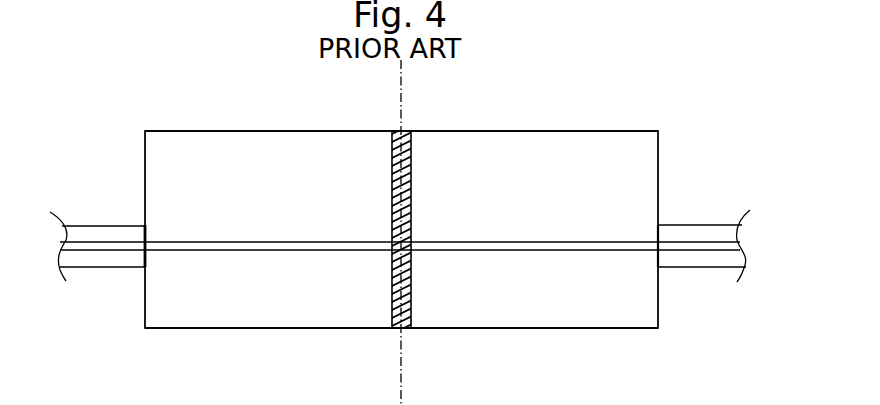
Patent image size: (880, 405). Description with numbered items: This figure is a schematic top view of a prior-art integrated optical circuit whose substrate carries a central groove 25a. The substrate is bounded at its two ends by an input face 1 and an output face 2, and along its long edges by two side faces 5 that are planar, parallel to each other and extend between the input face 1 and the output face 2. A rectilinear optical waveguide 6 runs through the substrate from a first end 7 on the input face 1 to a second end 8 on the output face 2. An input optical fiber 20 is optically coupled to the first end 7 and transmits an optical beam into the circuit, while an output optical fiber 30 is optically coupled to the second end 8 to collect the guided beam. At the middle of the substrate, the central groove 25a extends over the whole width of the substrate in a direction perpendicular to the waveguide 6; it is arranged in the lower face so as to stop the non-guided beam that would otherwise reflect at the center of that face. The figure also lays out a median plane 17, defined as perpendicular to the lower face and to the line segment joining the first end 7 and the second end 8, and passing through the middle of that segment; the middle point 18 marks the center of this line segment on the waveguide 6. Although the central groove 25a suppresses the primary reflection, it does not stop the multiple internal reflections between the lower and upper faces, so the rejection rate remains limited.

The input face 1 is at (143, 320).
The output face 2 is at (660, 141).
The side faces 5 is at (238, 131).
The optical waveguide 6 is at (543, 242).
The first end 7 is at (148, 245).
The second end 8 is at (658, 246).
The median plane 17 is at (403, 358).
The middle point 18 is at (397, 251).
The input optical fiber 20 is at (103, 255).
The central groove 25a is at (412, 157).
The output optical fiber 30 is at (720, 255).